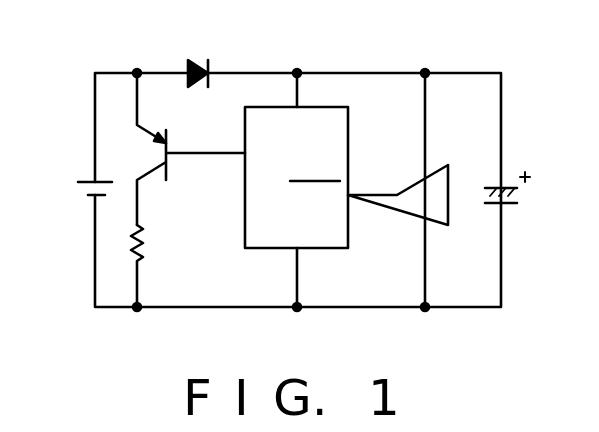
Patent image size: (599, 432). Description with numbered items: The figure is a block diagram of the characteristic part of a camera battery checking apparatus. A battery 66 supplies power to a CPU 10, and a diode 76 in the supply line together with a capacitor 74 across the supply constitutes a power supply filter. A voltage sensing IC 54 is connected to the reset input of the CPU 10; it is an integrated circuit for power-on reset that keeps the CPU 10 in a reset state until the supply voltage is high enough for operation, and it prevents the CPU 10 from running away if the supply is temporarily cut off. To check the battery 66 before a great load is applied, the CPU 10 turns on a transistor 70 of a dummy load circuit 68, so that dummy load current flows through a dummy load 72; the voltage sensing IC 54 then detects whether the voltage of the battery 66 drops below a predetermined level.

The CPU 10 is at (328, 243).
The voltage sensing IC 54 is at (438, 218).
The battery 66 is at (77, 187).
The dummy load circuit 68 is at (158, 119).
The transistor 70 is at (170, 178).
The dummy load 72 is at (147, 245).
The capacitor 74 is at (520, 199).
The diode 76 is at (210, 54).